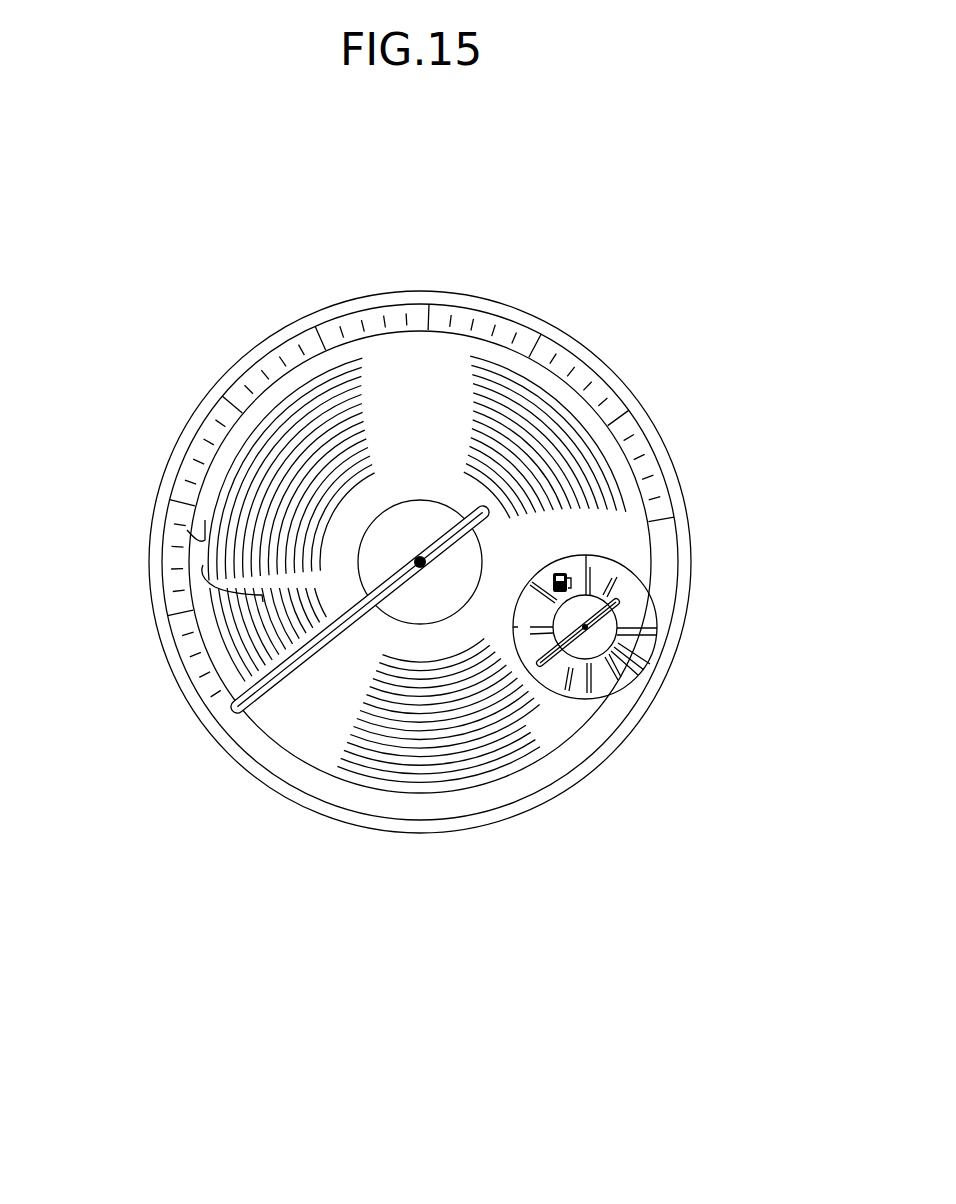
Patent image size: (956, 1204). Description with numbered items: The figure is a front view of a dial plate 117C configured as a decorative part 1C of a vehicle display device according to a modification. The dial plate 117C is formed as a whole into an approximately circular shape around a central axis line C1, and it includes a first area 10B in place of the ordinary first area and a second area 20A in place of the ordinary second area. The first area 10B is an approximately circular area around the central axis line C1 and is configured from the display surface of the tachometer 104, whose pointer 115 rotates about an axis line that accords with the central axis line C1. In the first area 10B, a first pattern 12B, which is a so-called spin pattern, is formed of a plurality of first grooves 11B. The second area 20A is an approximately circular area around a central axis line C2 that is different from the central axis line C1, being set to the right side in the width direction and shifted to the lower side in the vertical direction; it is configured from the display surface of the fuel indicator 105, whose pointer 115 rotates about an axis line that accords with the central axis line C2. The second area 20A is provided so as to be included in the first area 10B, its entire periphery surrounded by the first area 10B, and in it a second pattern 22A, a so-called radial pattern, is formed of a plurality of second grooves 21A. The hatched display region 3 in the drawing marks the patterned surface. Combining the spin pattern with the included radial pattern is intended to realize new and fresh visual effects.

The decorative part 1C is at (438, 579).
The dial plate 117C is at (434, 288).
The first area 10B is at (371, 328).
The first pattern 12B is at (226, 465).
The first grooves 11B is at (203, 565).
The tachometer 104 is at (331, 826).
The display region 3 is at (443, 690).
The pointer 115 is at (255, 712).
The central axis line C1 is at (420, 568).
The second area 20A is at (568, 712).
The fuel indicator 105 is at (648, 682).
The second grooves 21A is at (590, 568).
The second pattern 22A is at (599, 698).
The central axis line C2 is at (585, 627).